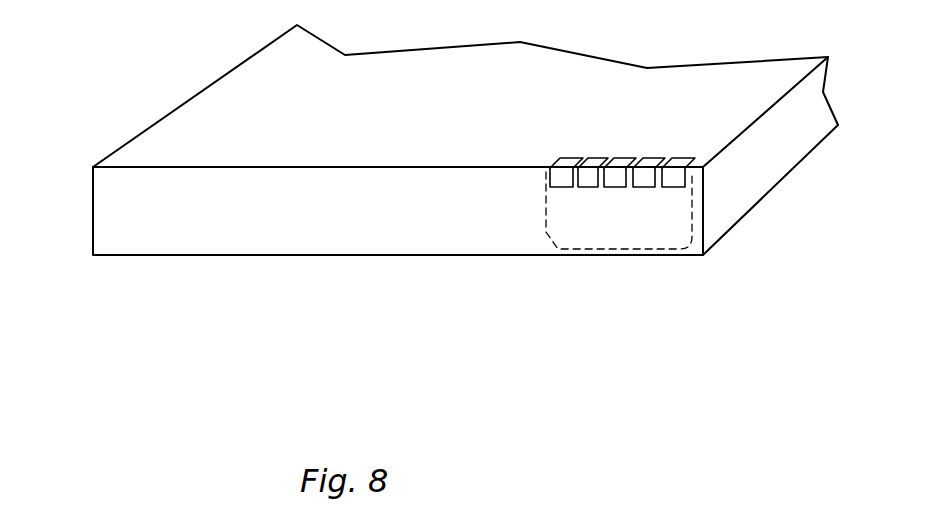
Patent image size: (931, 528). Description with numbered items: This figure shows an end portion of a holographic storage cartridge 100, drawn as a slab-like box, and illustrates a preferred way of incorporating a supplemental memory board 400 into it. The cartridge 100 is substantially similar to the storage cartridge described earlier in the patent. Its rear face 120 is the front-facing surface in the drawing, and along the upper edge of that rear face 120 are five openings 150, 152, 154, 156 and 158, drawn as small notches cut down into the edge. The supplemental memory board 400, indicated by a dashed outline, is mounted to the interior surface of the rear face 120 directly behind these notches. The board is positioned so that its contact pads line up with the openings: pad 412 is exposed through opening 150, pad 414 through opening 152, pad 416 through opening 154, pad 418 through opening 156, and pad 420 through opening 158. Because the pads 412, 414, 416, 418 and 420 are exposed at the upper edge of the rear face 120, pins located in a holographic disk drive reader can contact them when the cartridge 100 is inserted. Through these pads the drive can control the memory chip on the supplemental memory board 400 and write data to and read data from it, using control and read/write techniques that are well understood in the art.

The holographic storage cartridge 100 is at (428, 186).
The rear face 120 is at (118, 243).
The supplemental memory board 400 is at (546, 232).
The opening 150 is at (575, 163).
The opening 152 is at (597, 158).
The opening 154 is at (623, 158).
The opening 156 is at (647, 157).
The opening 158 is at (687, 165).
The pad 412 is at (555, 180).
The pad 414 is at (582, 180).
The pad 416 is at (612, 180).
The pad 418 is at (642, 180).
The pad 420 is at (668, 180).